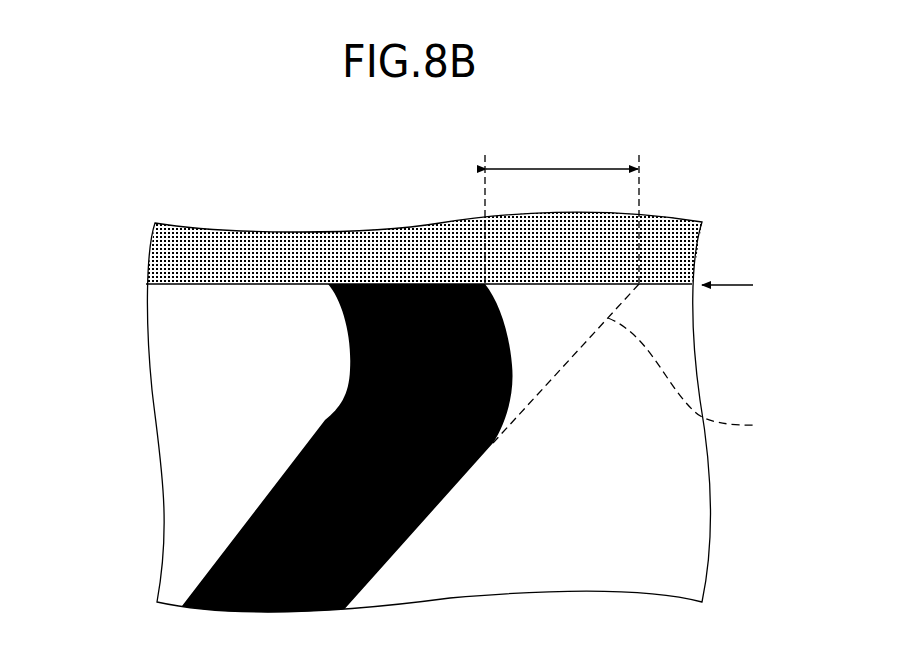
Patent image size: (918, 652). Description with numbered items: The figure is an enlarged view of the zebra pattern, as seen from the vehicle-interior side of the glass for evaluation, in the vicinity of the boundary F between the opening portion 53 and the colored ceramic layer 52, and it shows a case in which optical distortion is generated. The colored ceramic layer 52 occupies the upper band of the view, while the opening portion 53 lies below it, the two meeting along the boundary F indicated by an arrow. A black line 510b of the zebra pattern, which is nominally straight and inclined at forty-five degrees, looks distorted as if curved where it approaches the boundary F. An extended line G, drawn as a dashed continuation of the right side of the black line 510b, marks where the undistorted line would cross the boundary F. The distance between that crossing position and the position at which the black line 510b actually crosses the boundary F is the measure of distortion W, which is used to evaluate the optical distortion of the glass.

The colored ceramic layer 52 is at (150, 260).
The black line 510b is at (367, 397).
The opening portion 53 is at (173, 392).
The measure of distortion W is at (562, 208).
The boundary F is at (737, 285).
The extended line G is at (635, 363).